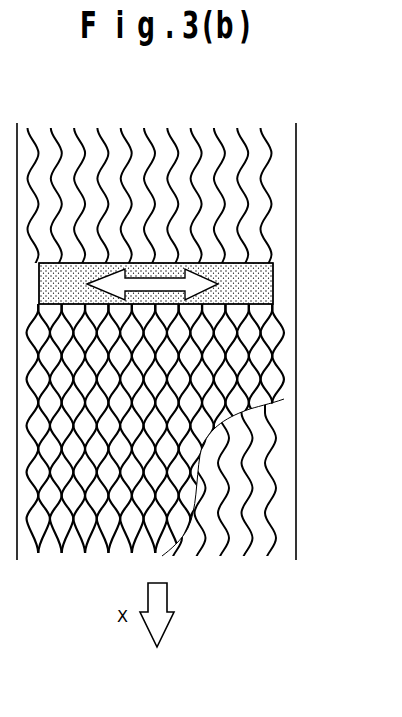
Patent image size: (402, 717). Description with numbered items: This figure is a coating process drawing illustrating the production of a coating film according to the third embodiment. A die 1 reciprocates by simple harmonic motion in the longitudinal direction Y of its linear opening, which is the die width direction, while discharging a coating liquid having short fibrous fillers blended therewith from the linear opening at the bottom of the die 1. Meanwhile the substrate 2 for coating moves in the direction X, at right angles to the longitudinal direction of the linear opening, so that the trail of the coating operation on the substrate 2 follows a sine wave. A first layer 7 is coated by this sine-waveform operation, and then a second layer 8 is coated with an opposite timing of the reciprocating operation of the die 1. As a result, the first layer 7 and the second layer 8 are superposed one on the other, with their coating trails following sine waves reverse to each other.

The die 1 is at (274, 282).
The substrate 2 is at (282, 197).
The first layer 7 is at (258, 461).
The second layer 8 is at (272, 375).